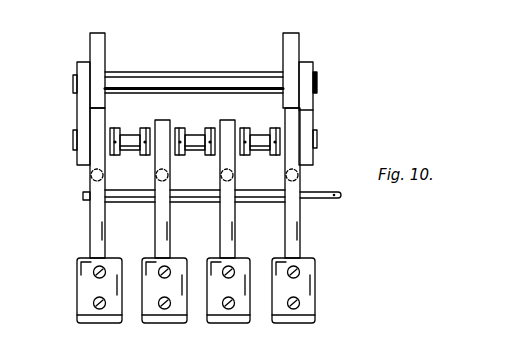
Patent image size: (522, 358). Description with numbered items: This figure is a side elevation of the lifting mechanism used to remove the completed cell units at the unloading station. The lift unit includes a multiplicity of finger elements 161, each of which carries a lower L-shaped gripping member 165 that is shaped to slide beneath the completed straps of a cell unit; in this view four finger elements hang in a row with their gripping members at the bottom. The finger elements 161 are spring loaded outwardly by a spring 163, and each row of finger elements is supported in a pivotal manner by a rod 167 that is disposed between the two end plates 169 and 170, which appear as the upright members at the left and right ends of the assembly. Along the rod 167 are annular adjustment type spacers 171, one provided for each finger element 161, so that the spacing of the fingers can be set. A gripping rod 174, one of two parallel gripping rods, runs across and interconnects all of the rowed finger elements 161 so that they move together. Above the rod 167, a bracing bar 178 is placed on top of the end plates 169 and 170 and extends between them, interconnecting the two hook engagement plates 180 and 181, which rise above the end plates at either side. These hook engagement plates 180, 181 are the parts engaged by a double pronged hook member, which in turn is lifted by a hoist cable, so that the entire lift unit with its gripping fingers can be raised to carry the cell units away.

The finger element 161 is at (228, 225).
The spring 163 is at (301, 174).
The L-shaped gripping member 165 is at (233, 281).
The rod 167 is at (133, 134).
The end plate 169 is at (77, 118).
The end plate 170 is at (315, 100).
The annular adjustment type spacer 171 is at (196, 134).
The gripping rod 174 is at (318, 201).
The bracing bar 178 is at (168, 82).
The hook engagement plate 180 is at (93, 47).
The hook engagement plate 181 is at (296, 42).